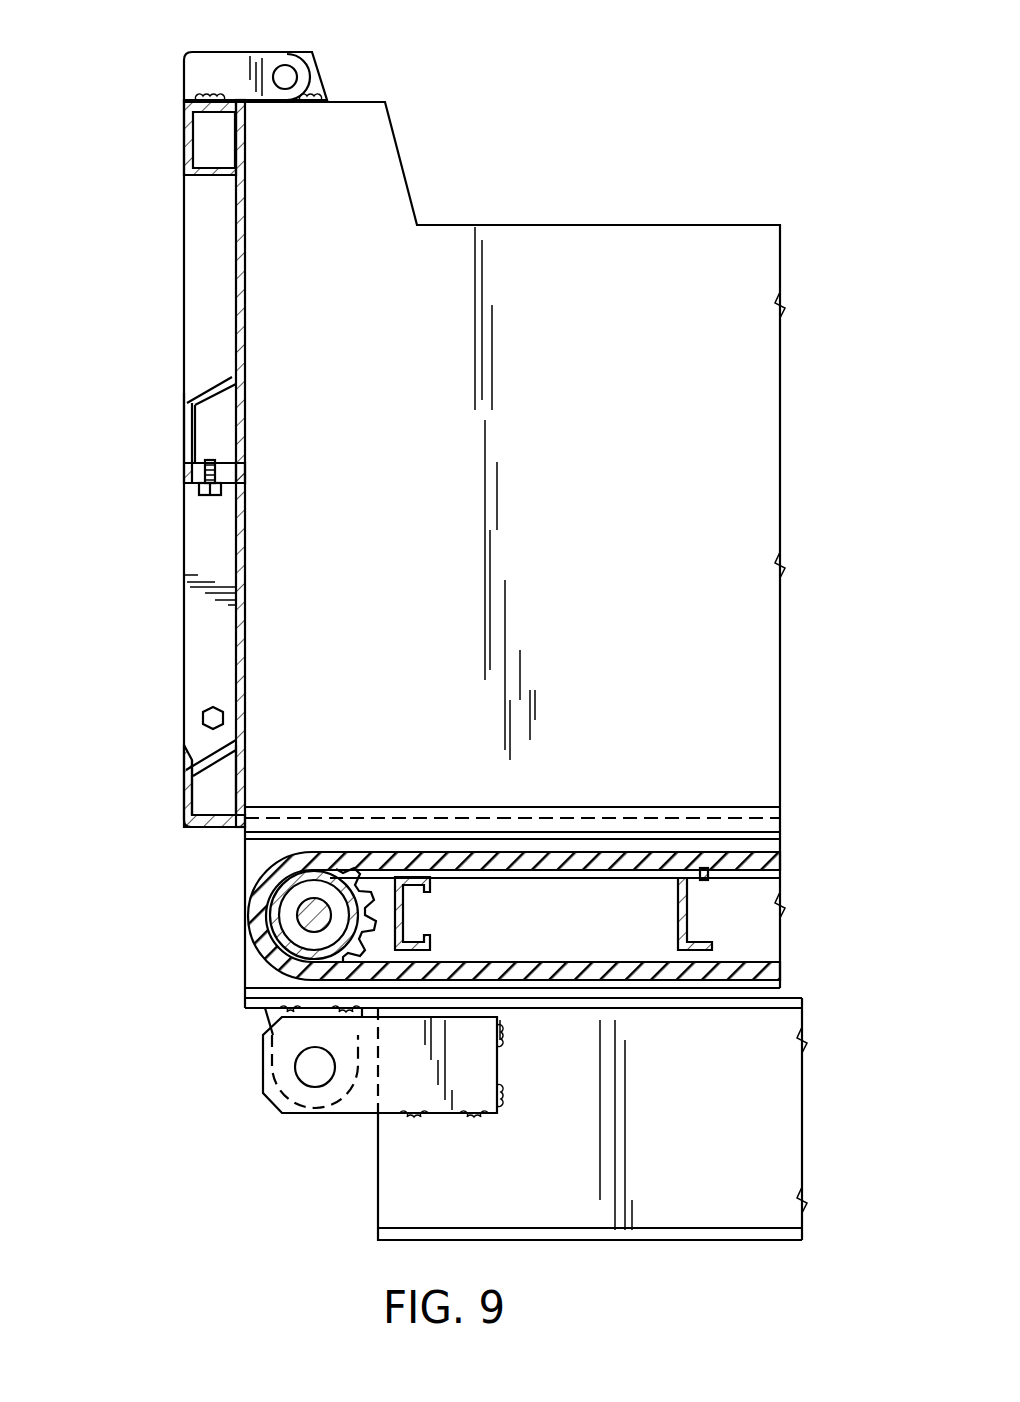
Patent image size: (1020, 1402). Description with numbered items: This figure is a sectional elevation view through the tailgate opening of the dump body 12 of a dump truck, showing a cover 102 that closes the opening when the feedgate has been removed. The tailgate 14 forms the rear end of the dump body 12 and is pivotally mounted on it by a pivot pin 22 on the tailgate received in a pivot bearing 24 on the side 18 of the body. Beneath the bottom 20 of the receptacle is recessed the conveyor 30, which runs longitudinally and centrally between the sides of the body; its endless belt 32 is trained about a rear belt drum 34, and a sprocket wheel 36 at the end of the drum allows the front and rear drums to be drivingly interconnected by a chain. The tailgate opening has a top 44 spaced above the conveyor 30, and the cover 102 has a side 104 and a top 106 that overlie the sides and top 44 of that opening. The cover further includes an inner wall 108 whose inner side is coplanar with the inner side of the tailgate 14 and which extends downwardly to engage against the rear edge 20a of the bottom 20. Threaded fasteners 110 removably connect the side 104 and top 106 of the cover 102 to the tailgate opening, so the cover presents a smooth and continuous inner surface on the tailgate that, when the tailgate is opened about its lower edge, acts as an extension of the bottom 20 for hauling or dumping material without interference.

The dump body 12 is at (573, 113).
The tailgate 14 is at (182, 290).
The side 18 is at (582, 240).
The bottom 20 is at (612, 806).
The rear edge 20a is at (232, 827).
The pivot pin 22 is at (287, 77).
The pivot bearing 24 is at (313, 52).
The conveyor 30 is at (255, 952).
The endless belt 32 is at (260, 930).
The rear belt drum 34 is at (280, 892).
The sprocket wheel 36 is at (377, 915).
The top 44 is at (186, 485).
The cover 102 is at (178, 603).
The side 104 is at (203, 657).
The top 106 is at (223, 482).
The inner wall 108 is at (240, 578).
The threaded fastener 110 is at (203, 493).